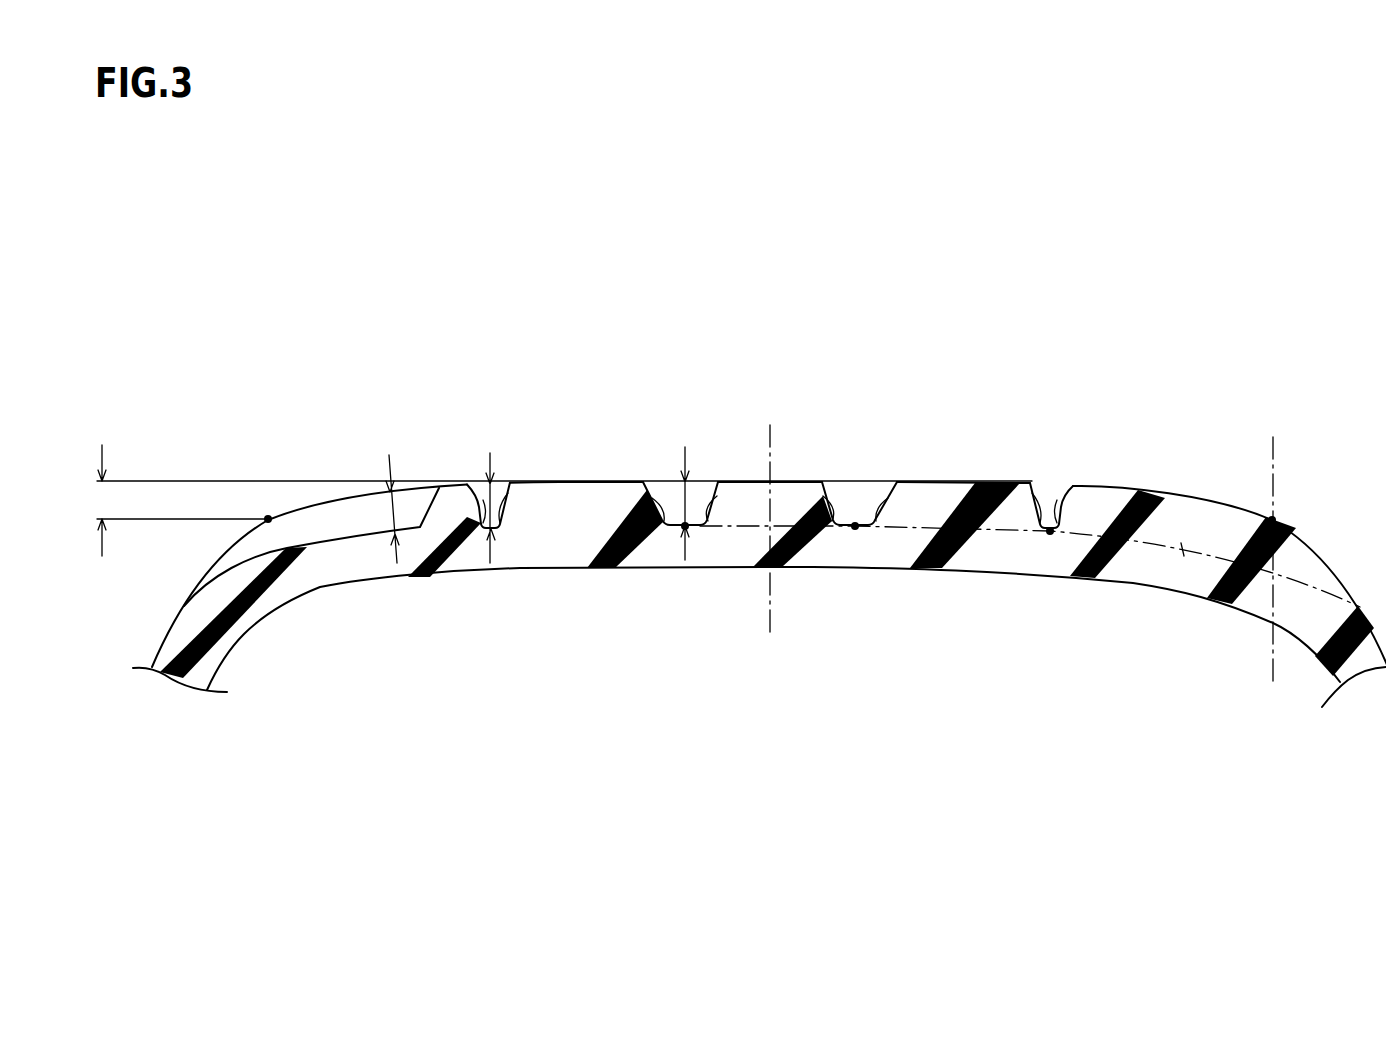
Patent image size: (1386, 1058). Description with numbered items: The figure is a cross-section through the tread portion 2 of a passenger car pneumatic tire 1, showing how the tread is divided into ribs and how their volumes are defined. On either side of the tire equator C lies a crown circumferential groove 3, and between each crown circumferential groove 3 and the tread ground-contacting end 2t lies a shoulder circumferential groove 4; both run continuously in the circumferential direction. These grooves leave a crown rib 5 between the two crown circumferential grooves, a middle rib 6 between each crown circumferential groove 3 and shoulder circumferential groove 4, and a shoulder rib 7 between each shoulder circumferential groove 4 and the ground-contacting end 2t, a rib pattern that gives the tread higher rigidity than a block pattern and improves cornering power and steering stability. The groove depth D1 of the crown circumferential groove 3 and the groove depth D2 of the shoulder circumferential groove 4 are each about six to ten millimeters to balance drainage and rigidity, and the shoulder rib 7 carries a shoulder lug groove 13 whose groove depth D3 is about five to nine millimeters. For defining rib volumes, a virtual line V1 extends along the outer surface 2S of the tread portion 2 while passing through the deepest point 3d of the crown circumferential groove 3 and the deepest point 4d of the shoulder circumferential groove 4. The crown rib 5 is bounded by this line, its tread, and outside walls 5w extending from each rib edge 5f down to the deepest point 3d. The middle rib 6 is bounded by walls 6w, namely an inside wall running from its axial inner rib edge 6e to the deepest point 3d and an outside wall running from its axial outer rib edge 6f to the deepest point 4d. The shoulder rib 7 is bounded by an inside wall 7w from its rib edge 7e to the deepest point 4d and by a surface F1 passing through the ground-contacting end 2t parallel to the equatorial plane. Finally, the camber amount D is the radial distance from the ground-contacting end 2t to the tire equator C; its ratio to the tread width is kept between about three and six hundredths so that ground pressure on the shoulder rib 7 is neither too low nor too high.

The pneumatic tire 1 is at (1270, 328).
The tread portion 2 is at (1103, 323).
The outer surface of the tread portion 2S is at (932, 482).
The tread ground-contacting end 2t is at (268, 520).
The crown circumferential groove 3 is at (664, 497).
The deepest point of the crown circumferential groove 3d is at (685, 530).
The shoulder circumferential groove 4 is at (486, 500).
The deepest point of the shoulder circumferential groove 4d is at (1050, 535).
The crown rib 5 is at (743, 478).
The rib edge of the crown rib 5f is at (718, 481).
The outside wall of the crown rib 5w is at (707, 525).
The middle rib 6 is at (569, 481).
The axial inner rib edge of the middle rib 6e is at (896, 482).
The axial outer rib edge of the middle rib 6f is at (1033, 482).
The wall of the middle rib 6w is at (876, 525).
The shoulder rib 7 is at (336, 497).
The rib edge of the shoulder rib 7e is at (1068, 486).
The inside wall of the shoulder rib 7w is at (1059, 525).
The shoulder lug groove 13 is at (297, 545).
The camber amount D is at (562, 500).
The groove depth of the crown circumferential groove D1 is at (682, 530).
The groove depth of the shoulder circumferential groove D2 is at (488, 542).
The groove depth of the shoulder lug groove D3 is at (393, 530).
The tire equator C is at (770, 635).
The surface passing through the ground-contacting end F1 is at (1275, 457).
The virtual line V1 is at (1183, 550).